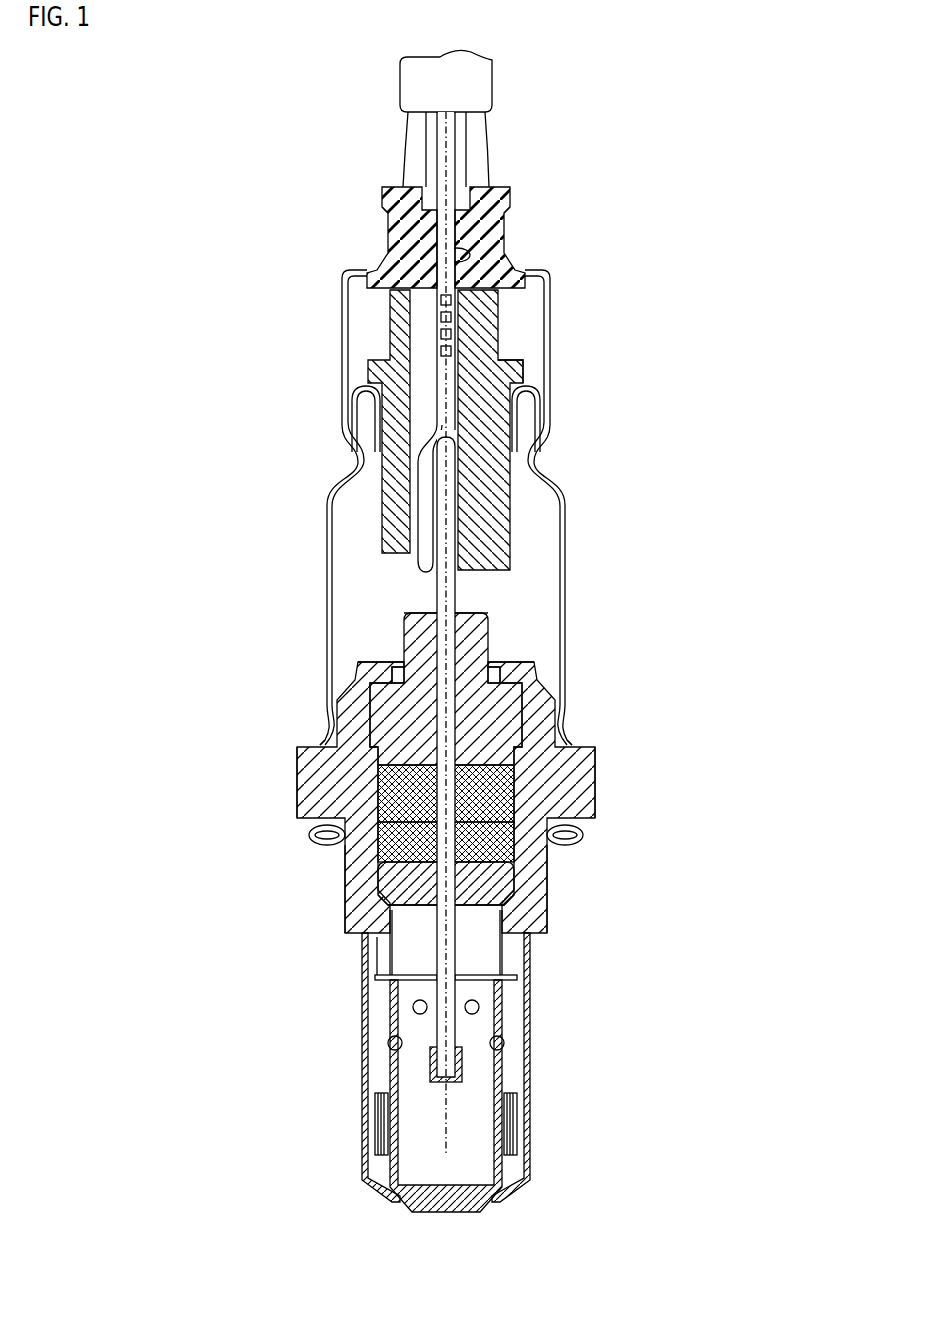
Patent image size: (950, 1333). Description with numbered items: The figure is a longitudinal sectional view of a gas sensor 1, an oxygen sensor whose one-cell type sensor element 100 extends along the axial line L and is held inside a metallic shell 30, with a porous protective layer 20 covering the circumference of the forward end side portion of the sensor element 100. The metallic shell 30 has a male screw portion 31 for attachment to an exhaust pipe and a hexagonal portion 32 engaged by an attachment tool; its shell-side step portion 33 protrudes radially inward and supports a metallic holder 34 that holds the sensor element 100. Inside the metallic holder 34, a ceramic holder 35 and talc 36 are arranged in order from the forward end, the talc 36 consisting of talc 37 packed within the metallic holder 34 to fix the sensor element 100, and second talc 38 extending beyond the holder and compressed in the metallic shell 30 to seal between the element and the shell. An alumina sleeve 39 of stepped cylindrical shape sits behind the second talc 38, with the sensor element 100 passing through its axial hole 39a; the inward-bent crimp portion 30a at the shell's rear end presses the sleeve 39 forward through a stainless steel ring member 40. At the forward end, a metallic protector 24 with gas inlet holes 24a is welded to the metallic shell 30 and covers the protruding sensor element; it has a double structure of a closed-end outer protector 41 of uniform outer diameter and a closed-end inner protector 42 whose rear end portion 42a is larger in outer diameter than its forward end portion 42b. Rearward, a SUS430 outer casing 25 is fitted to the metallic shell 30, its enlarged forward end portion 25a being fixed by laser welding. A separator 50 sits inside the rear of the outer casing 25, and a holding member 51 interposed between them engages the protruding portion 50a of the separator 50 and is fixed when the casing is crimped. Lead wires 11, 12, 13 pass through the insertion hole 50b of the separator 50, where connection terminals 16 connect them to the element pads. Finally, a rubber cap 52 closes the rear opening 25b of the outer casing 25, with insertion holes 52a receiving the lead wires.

The gas sensor 1 is at (704, 233).
The lead wire 11 is at (443, 170).
The lead wire 12 is at (408, 128).
The lead wire 13 is at (475, 158).
The connection terminal 16 is at (447, 413).
The porous protective layer 20 is at (440, 1088).
The protector 24 is at (436, 1087).
The gas inlet hole 24a is at (470, 1005).
The outer casing 25 is at (343, 330).
The forward end portion of outer casing 25a is at (565, 725).
The opening of outer casing 25b is at (506, 232).
The metallic shell 30 is at (597, 805).
The crimp portion 30a is at (500, 660).
The male screw portion 31 is at (553, 918).
The hexagonal portion 32 is at (597, 765).
The shell-side step portion 33 is at (520, 892).
The metallic holder 34 is at (372, 935).
The ceramic holder 35 is at (355, 903).
The talc 36 is at (348, 823).
The talc 37 is at (378, 858).
The second talc 38 is at (378, 795).
The sleeve 39 is at (375, 702).
The axial hole 39a is at (440, 637).
The ring member 40 is at (525, 675).
The outer protector 41 is at (532, 1125).
The inner protector 42 is at (392, 1030).
The rear end portion of inner protector 42a is at (388, 990).
The forward end portion of inner protector 42b is at (386, 1088).
The separator 50 is at (400, 300).
The protruding portion 50a is at (520, 385).
The insertion hole 50b is at (455, 350).
The holding member 51 is at (352, 395).
The rubber cap 52 is at (412, 240).
The insertion hole 52a is at (468, 253).
The sensor element 100 is at (462, 1065).
The axial line L is at (447, 1145).